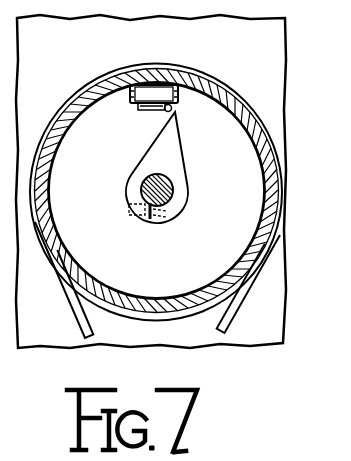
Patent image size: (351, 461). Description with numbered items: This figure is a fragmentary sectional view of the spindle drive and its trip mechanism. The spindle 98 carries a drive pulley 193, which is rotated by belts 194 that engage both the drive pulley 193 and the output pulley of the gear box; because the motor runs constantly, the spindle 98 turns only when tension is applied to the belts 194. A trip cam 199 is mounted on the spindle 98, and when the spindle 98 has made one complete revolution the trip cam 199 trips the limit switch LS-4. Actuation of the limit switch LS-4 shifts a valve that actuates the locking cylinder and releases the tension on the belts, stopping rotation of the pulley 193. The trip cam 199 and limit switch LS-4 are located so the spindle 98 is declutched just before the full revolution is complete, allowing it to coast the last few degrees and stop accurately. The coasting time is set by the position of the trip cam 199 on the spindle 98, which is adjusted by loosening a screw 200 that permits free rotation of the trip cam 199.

The limit switch LS-4 is at (167, 85).
The trip cam 199 is at (183, 158).
The spindle 98 is at (173, 192).
The screw 200 is at (133, 212).
The drive pulley 193 is at (148, 299).
The belts 194 is at (96, 336).